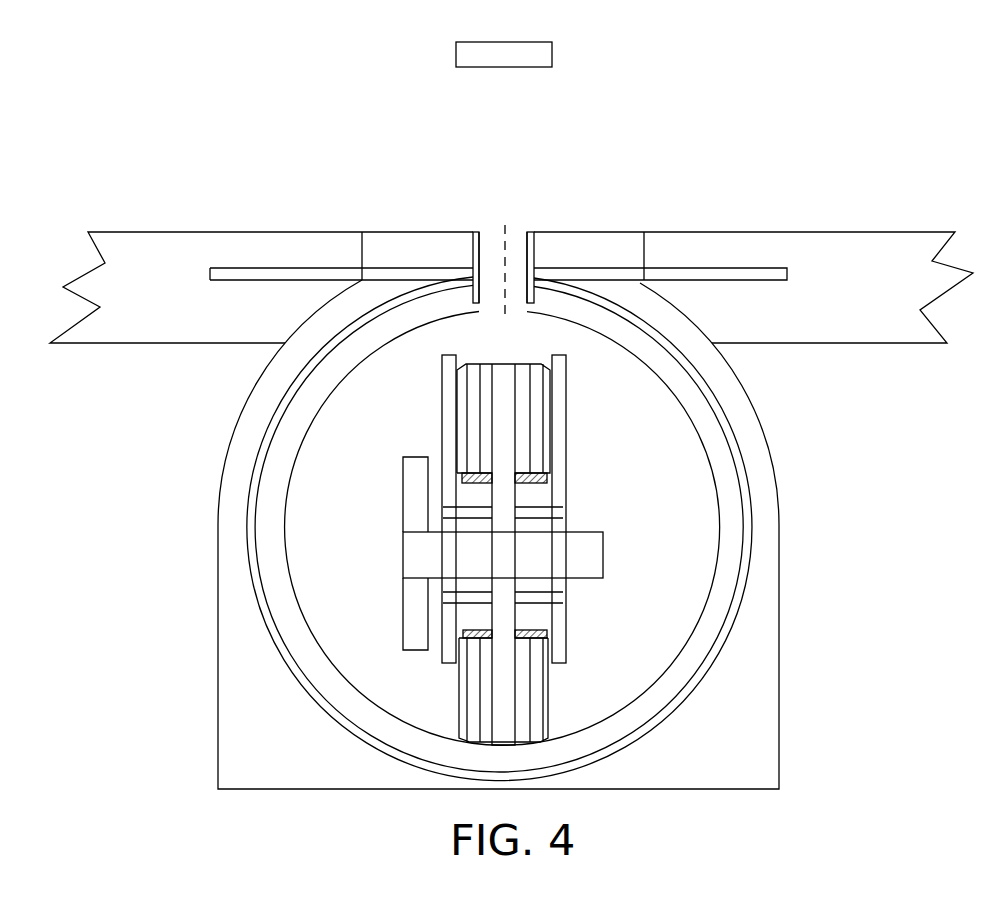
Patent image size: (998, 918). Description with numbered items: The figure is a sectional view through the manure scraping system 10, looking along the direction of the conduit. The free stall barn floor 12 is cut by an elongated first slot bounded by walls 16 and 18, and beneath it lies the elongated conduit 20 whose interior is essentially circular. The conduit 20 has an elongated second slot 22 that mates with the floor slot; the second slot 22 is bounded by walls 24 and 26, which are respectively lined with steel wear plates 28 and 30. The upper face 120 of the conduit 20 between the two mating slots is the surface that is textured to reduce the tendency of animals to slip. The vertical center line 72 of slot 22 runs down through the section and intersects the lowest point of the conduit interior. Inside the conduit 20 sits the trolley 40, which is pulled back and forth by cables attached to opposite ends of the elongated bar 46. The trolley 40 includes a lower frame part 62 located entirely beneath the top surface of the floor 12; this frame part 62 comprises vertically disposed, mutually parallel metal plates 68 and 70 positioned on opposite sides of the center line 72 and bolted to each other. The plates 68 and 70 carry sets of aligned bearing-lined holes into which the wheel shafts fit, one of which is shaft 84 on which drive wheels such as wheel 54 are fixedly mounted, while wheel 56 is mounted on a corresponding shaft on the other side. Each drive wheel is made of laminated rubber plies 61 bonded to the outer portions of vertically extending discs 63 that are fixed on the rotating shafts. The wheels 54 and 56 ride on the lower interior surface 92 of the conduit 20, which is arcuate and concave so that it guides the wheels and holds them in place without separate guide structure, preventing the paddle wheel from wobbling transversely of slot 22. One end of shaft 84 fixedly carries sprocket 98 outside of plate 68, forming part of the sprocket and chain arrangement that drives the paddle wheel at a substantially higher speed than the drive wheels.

The system 10 is at (355, 85).
The free stall barn floor 12 is at (182, 232).
The wall of first slot 16 is at (362, 258).
The wall of first slot 18 is at (645, 250).
The elongated conduit 20 is at (770, 435).
The elongated second slot 22 is at (526, 246).
The wall of second slot 24 is at (473, 250).
The wall of second slot 26 is at (540, 252).
The steel wear plate 28 is at (486, 254).
The steel wear plate 30 is at (535, 303).
The trolley 40 is at (380, 519).
The elongated bar 46 is at (512, 50).
The drive wheel 54 is at (485, 373).
The drive wheel 56 is at (518, 373).
The laminated rubber plies 61 is at (463, 700).
The lower frame part 62 is at (585, 508).
The vertically extending disc 63 is at (505, 628).
The frame plate 68 is at (447, 416).
The frame plate 70 is at (566, 421).
The vertical center line of slot 72 is at (514, 240).
The shaft 84 is at (595, 557).
The lower interior surface 92 is at (422, 728).
The sprocket 98 is at (414, 488).
The upper face of conduit 120 is at (366, 232).